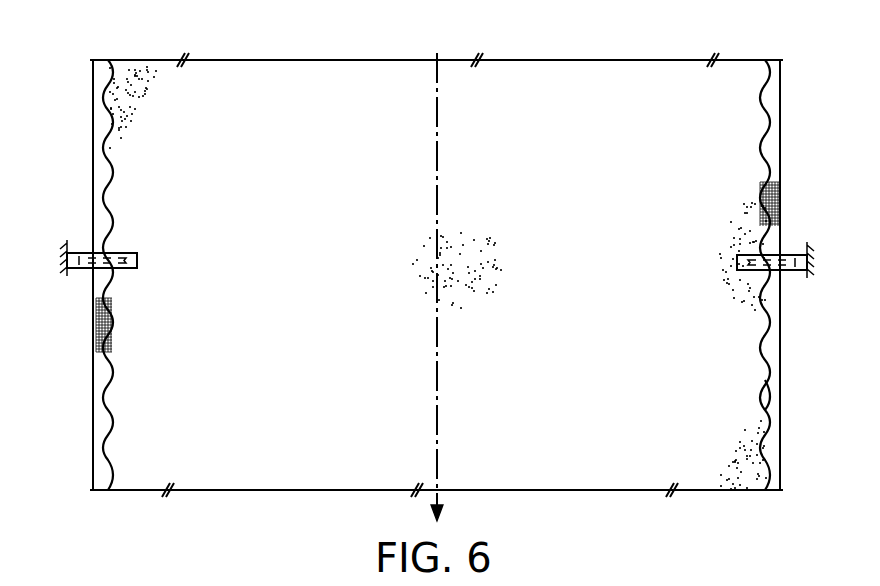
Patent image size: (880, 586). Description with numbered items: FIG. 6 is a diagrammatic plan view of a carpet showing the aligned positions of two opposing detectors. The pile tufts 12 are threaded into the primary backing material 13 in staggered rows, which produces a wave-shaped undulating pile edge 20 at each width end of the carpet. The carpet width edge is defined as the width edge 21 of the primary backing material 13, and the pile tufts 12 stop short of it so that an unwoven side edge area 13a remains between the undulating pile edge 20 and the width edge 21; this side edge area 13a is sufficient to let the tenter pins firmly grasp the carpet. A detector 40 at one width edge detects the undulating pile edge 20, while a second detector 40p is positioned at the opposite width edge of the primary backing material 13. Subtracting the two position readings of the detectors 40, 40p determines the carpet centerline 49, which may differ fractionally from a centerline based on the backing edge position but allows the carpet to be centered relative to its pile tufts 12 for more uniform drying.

The pile tufts 12 is at (658, 75).
The primary backing material 13 is at (782, 340).
The side edge area 13a is at (774, 413).
The undulating pile edge 20 is at (762, 110).
The width edge 21 is at (781, 152).
The detector 40 is at (787, 252).
The second detector 40p is at (83, 250).
The carpet centerline 49 is at (437, 357).